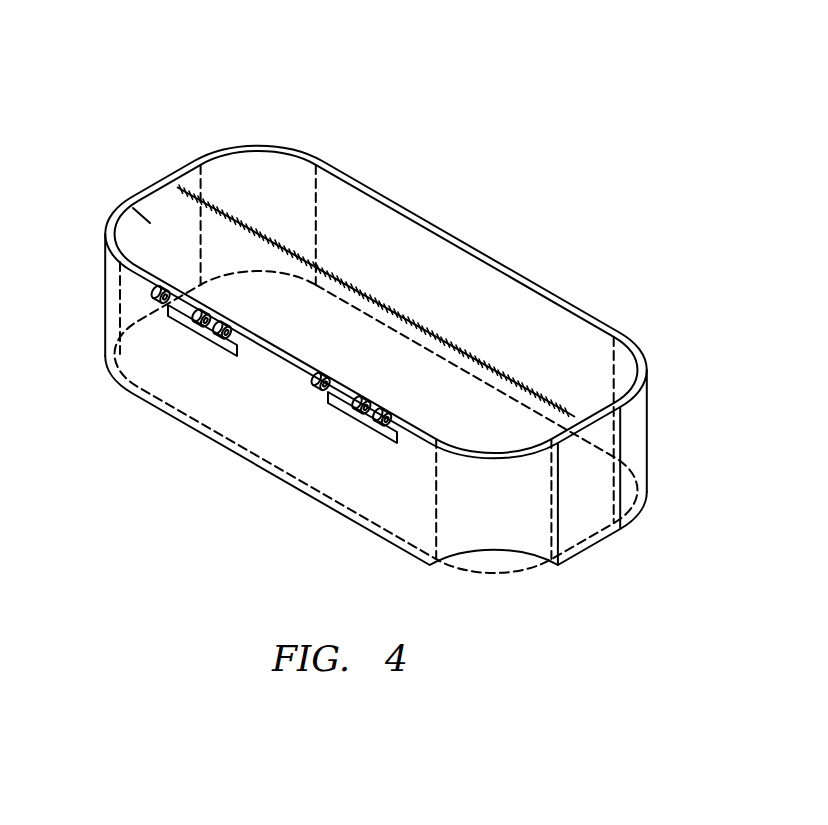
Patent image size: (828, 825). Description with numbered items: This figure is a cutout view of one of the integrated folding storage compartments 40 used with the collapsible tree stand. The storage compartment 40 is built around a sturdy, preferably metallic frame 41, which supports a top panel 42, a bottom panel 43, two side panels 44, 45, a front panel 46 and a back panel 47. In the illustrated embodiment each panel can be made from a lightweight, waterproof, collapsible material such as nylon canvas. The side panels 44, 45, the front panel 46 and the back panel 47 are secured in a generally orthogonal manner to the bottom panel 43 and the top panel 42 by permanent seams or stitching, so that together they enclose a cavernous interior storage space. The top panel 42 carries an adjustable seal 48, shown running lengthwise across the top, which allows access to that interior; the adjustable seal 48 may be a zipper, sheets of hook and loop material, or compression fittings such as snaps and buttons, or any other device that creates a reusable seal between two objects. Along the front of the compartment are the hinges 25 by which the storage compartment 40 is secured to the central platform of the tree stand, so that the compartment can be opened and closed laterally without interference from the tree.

The hinges 25 is at (322, 388).
The storage compartment 40 is at (148, 88).
The frame 41 is at (331, 158).
The top panel 42 is at (413, 263).
The bottom panel 43 is at (348, 350).
The side panel 44 is at (555, 341).
The side panel 45 is at (360, 477).
The front panel 46 is at (590, 488).
The back panel 47 is at (122, 203).
The adjustable seal 48 is at (462, 339).